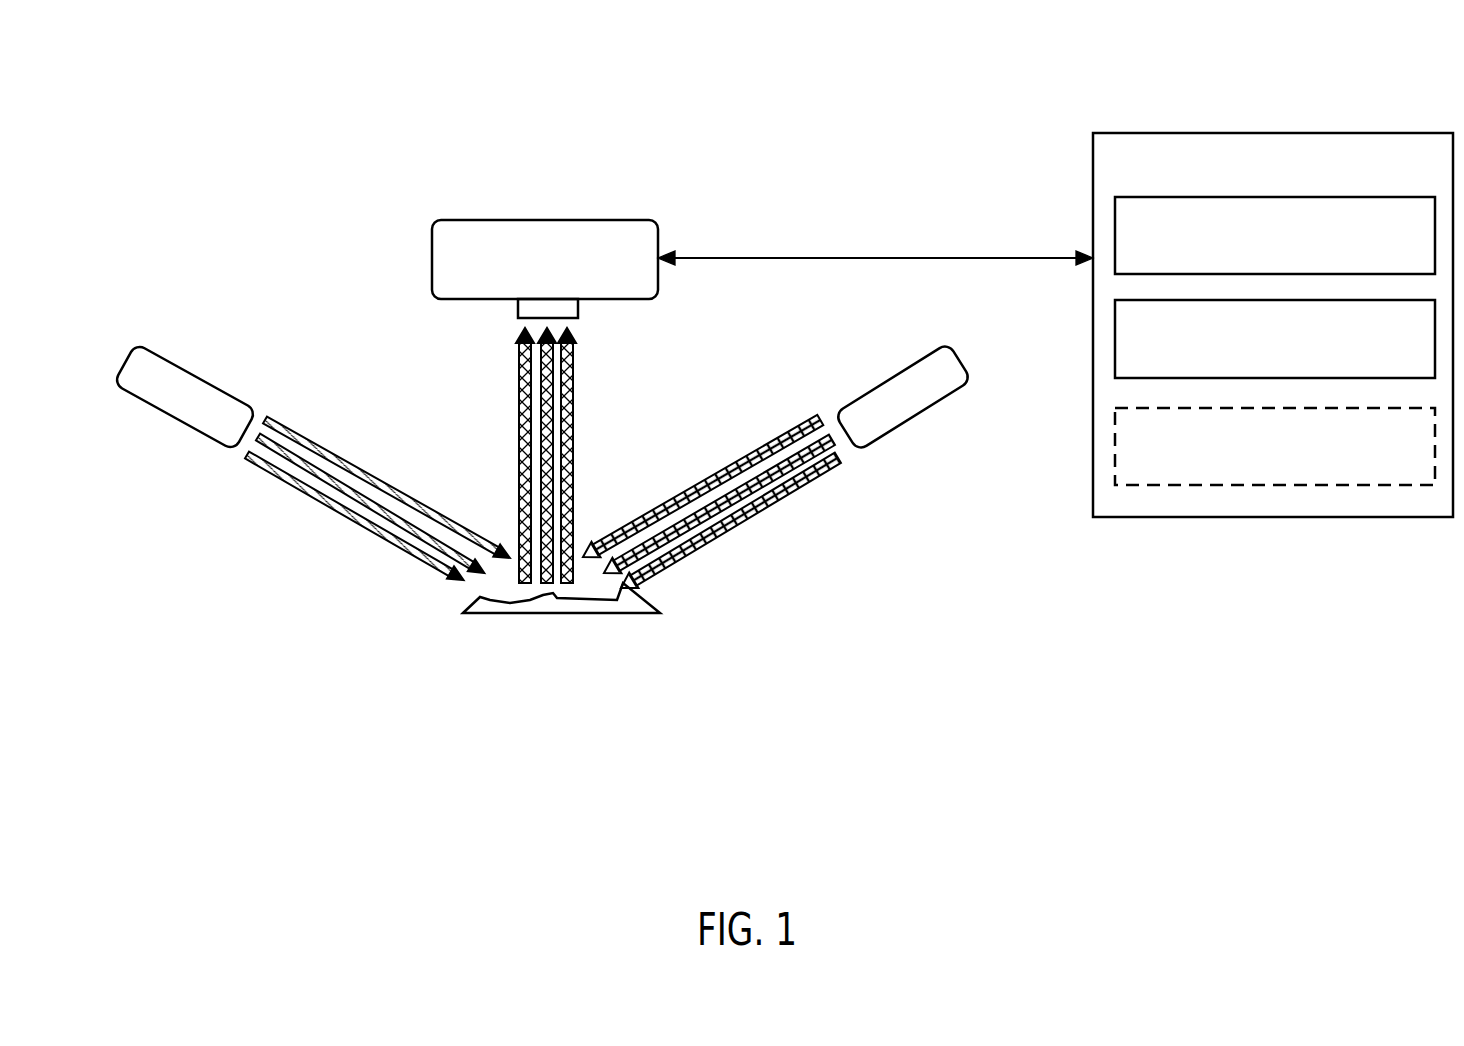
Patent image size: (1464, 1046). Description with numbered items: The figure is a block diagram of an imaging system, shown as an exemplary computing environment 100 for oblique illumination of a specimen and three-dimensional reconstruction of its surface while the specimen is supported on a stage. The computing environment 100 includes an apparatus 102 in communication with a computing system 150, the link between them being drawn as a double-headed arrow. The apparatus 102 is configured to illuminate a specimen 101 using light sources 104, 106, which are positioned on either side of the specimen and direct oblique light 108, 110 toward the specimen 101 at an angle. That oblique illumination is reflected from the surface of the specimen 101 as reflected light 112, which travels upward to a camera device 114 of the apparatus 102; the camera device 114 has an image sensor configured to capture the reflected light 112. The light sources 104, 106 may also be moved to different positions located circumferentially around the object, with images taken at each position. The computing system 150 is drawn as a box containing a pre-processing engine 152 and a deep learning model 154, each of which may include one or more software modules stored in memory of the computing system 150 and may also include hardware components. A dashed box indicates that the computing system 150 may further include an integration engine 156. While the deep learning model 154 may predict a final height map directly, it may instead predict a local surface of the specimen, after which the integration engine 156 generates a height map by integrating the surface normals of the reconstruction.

The computing environment 100 is at (350, 75).
The specimen 101 is at (480, 597).
The apparatus 102 is at (268, 218).
The light source 104 is at (233, 397).
The light source 106 is at (918, 398).
The oblique light 108 is at (343, 503).
The oblique light 110 is at (728, 520).
The reflected light 112 is at (571, 432).
The camera device 114 is at (623, 230).
The computing system 150 is at (1315, 167).
The pre-processing engine 152 is at (1400, 249).
The deep learning model 154 is at (1392, 353).
The integration engine 156 is at (1377, 457).